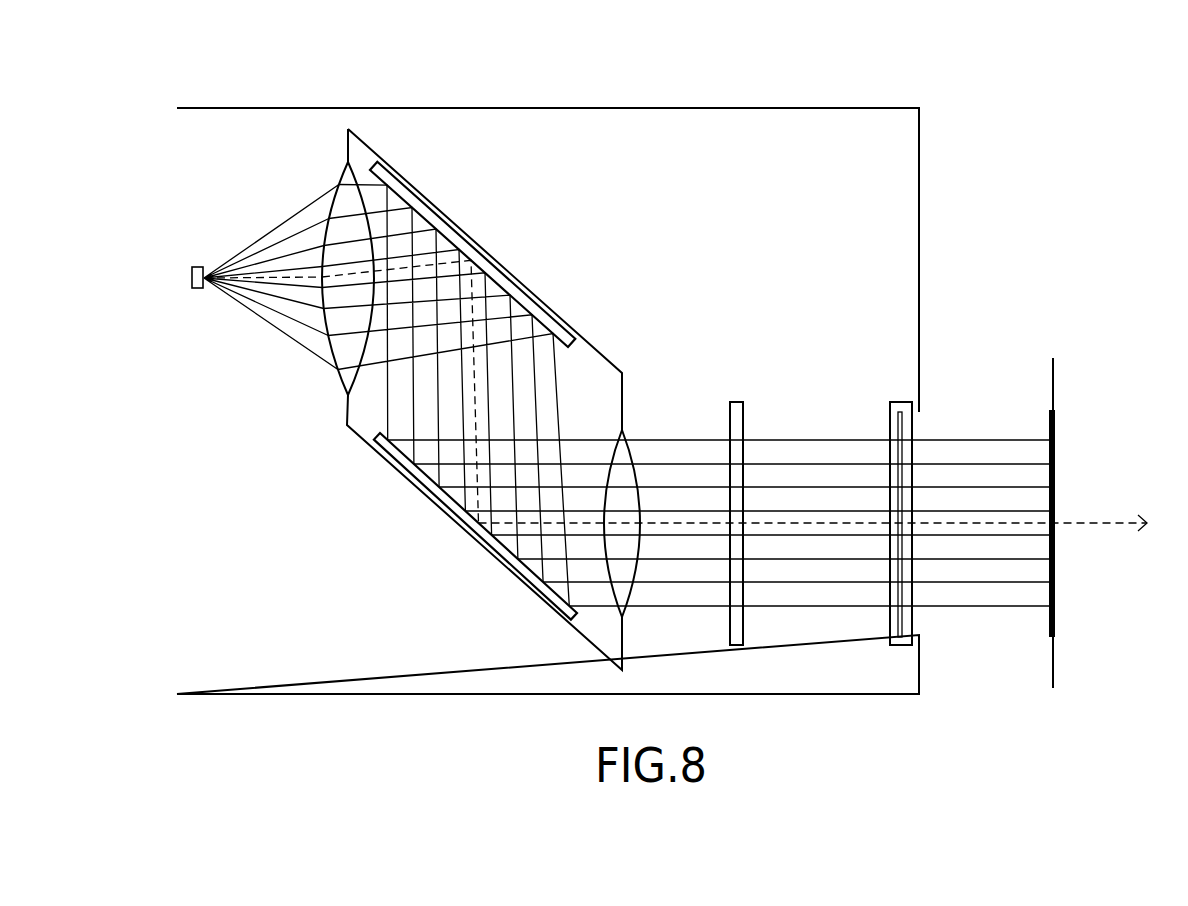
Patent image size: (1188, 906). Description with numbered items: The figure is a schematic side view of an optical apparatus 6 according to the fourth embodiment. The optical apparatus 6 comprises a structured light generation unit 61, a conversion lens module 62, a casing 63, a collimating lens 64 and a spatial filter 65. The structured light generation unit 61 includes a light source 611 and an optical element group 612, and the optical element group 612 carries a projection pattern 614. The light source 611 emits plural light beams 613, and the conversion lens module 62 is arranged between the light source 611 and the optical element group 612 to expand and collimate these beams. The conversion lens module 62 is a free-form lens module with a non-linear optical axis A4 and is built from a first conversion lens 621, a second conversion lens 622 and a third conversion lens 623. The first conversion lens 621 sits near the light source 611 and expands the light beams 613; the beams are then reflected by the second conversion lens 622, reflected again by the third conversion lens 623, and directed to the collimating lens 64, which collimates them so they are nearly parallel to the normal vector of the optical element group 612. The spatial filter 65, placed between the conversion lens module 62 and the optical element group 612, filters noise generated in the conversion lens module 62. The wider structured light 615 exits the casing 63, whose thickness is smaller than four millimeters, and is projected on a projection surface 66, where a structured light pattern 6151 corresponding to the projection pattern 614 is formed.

The optical apparatus 6 is at (367, 56).
The structured light generation unit 61 is at (990, 168).
The light source 611 is at (193, 266).
The optical element group 612 is at (906, 402).
The light beams 613 is at (278, 332).
The projection pattern 614 is at (898, 618).
The structured light 615 is at (940, 438).
The structured light pattern 6151 is at (1050, 622).
The conversion lens module 62 is at (1112, 158).
The first conversion lens 621 is at (347, 175).
The second conversion lens 622 is at (500, 277).
The third conversion lens 623 is at (472, 532).
The casing 63 is at (672, 122).
The collimating lens 64 is at (623, 432).
The spatial filter 65 is at (737, 430).
The projection surface 66 is at (1054, 383).
The non-linear optical axis A4 is at (831, 524).